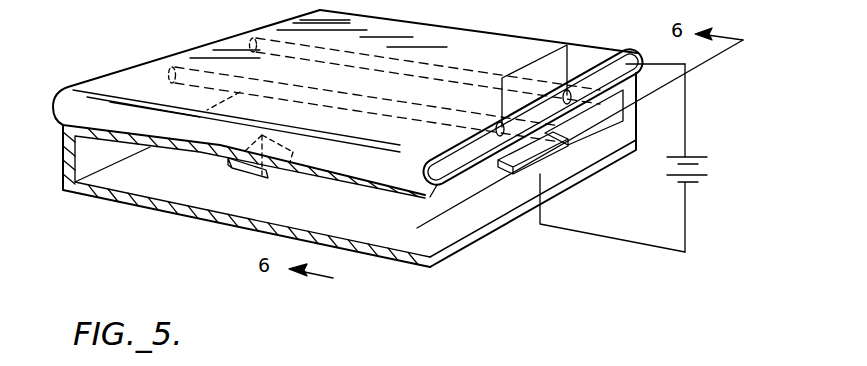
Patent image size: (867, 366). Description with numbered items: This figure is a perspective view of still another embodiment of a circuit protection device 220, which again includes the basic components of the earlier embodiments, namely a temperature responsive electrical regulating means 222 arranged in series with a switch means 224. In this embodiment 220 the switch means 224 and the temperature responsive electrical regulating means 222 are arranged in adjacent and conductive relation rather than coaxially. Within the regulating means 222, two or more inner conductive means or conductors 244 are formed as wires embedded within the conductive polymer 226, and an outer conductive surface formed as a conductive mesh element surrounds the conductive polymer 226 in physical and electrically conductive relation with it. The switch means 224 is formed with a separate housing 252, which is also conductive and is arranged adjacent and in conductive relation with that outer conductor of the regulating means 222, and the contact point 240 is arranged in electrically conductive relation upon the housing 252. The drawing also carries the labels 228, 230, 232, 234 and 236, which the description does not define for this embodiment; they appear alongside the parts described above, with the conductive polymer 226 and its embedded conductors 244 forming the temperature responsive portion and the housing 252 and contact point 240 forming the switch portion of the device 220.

The circuit protection device 220 is at (201, 46).
The temperature responsive electrical regulating means 222 is at (630, 60).
The switch means 224 is at (612, 122).
The conductive polymer 226 is at (447, 166).
The connecting tab 228 is at (554, 147).
The lead wire 230 is at (538, 228).
The wire loop 232 is at (530, 63).
The power source 234 is at (687, 228).
The hidden element 236 is at (337, 142).
The contact point 240 is at (233, 170).
The inner conductive means 244 is at (496, 124).
The housing 252 is at (431, 268).